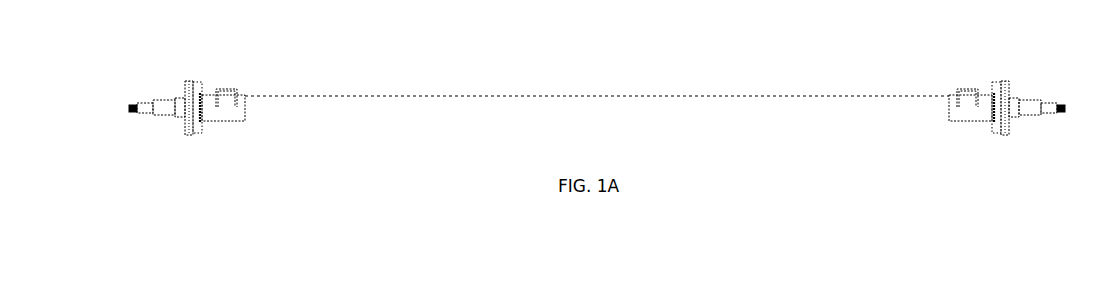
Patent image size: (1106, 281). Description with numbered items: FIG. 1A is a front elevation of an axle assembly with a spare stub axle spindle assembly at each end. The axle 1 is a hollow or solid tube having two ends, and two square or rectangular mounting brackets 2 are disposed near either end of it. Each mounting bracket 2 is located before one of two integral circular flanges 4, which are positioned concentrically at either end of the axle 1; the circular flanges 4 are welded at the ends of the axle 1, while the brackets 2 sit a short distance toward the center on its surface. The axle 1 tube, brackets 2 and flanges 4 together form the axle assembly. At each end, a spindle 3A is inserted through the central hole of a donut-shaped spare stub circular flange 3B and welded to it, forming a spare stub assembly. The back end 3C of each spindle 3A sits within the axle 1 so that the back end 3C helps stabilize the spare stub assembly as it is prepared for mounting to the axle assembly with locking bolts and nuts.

The axle 1 is at (603, 93).
The mounting bracket 2 is at (229, 88).
The spindle 3A is at (163, 99).
The spare stub circular flange 3B is at (187, 80).
The back end 3C is at (227, 121).
The integral circular flange 4 is at (198, 81).